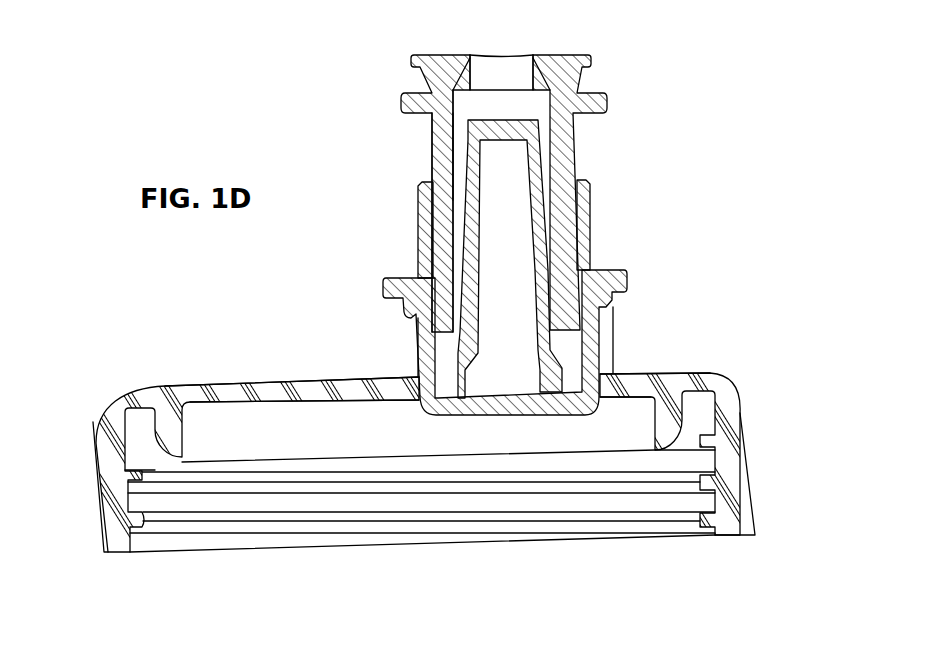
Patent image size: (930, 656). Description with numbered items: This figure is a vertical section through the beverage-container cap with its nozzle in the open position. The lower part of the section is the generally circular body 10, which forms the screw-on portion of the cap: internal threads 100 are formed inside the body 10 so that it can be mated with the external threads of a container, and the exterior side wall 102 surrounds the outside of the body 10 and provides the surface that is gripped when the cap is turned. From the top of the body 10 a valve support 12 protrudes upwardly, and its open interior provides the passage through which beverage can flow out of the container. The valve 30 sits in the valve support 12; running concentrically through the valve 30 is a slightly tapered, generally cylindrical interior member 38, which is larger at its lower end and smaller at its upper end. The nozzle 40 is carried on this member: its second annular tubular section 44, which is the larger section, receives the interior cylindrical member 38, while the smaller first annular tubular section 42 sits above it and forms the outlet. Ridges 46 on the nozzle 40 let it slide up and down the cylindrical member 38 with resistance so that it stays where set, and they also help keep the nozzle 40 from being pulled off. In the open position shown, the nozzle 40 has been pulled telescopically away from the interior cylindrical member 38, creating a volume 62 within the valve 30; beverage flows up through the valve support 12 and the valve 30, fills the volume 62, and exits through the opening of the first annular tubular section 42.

The body 10 is at (427, 453).
The valve support 12 is at (613, 339).
The valve 30 is at (620, 268).
The interior cylindrical member 38 is at (513, 128).
The nozzle 40 is at (603, 90).
The first annular tubular section 42 is at (499, 73).
The second annular tubular section 44 is at (427, 247).
The ridges 46 is at (418, 200).
The volume 62 is at (462, 136).
The internal threads 100 is at (147, 527).
The exterior side wall 102 is at (97, 520).